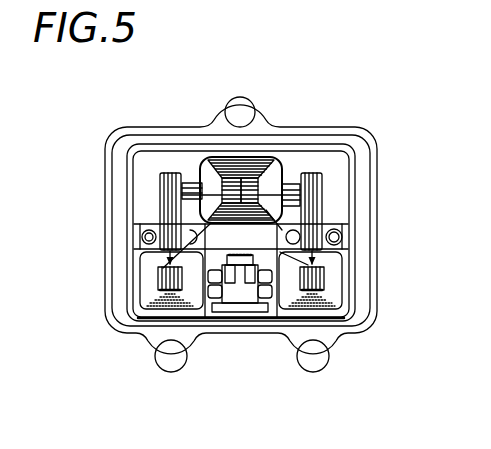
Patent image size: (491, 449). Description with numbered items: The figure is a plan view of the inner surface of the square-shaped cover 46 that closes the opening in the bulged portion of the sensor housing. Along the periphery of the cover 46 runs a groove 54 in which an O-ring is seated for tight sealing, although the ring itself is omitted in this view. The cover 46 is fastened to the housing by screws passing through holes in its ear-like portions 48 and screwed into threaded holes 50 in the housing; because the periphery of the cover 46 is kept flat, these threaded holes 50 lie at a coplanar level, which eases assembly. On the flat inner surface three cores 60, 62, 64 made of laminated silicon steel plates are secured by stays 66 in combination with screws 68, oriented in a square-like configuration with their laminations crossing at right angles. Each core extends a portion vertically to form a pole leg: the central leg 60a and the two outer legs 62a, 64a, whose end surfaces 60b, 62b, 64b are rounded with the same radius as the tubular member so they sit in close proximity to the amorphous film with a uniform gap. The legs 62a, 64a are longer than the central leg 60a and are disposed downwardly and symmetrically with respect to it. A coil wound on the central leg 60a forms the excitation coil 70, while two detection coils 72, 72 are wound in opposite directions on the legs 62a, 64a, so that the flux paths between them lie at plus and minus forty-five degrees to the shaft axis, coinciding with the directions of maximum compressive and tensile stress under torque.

The cover 46 is at (380, 219).
The ear-like portions 48 is at (228, 84).
The threaded holes 50 is at (240, 103).
The groove 54 is at (364, 181).
The core 60 is at (294, 182).
The central leg 60a is at (247, 182).
The end surface 60b is at (233, 180).
The core 62 is at (323, 175).
The leg 62a is at (325, 275).
The end surface 62b is at (325, 283).
The core 64 is at (160, 190).
The leg 64a is at (160, 283).
The end surface 64b is at (174, 292).
The stays 66 is at (137, 247).
The screws 68 is at (135, 259).
The excitation coil 70 is at (207, 165).
The detection coils 72 is at (145, 293).